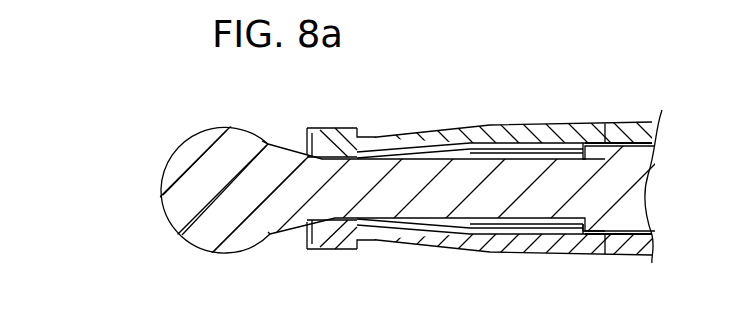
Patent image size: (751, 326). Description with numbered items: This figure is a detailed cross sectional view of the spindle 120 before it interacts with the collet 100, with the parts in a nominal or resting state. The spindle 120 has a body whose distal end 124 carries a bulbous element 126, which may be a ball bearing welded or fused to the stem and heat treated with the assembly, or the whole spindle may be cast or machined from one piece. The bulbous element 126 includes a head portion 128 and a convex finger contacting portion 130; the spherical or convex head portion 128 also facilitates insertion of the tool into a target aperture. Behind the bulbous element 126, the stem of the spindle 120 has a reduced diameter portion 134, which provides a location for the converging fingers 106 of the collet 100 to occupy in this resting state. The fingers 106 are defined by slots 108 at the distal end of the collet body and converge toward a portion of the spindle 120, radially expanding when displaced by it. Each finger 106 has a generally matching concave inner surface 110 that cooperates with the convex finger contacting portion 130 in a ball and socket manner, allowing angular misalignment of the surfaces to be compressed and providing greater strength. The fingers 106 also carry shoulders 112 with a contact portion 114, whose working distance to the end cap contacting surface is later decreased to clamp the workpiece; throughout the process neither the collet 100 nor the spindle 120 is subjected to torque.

The collet 100 is at (656, 243).
The fingers 106 is at (443, 124).
The slots 108 is at (548, 148).
The concave inner surface 110 is at (327, 128).
The shoulders 112 is at (353, 128).
The contact portion 114 is at (360, 134).
The spindle 120 is at (614, 180).
The distal end 124 is at (161, 192).
The bulbous element 126 is at (203, 150).
The head portion 128 is at (181, 237).
The convex finger contacting portion 130 is at (262, 140).
The reduced diameter portion 134 is at (572, 245).